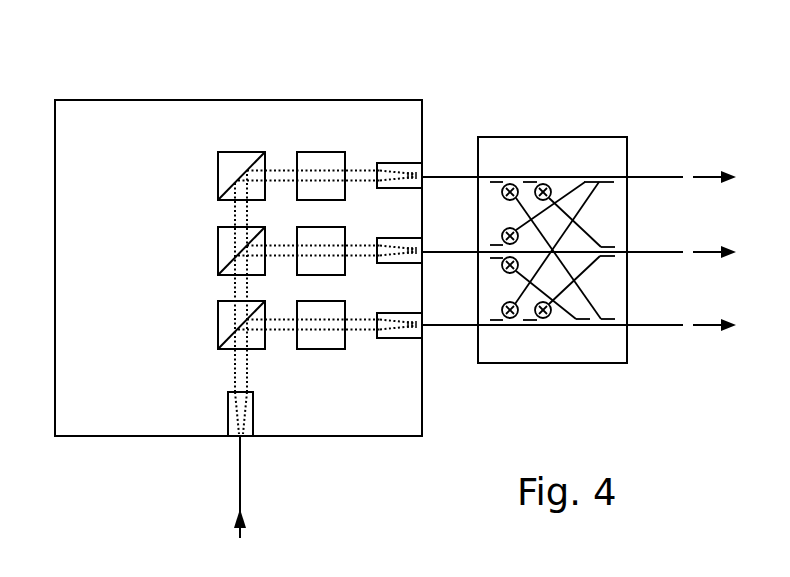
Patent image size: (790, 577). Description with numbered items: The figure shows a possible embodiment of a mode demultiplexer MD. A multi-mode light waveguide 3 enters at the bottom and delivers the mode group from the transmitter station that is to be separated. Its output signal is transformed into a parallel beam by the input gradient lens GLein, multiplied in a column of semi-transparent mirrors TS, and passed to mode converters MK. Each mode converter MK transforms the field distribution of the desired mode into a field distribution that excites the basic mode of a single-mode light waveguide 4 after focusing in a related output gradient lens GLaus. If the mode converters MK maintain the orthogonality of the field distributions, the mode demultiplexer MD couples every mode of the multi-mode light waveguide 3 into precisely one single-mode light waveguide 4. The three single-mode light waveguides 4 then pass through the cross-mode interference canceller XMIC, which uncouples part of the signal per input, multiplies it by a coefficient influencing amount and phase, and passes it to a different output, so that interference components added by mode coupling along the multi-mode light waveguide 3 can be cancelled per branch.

The mode demultiplexer MD is at (83, 125).
The semi-transparent mirrors TS is at (232, 160).
The mode converters MK is at (318, 158).
The gradient lens on the output side GLaus is at (415, 167).
The gradient lens on the input side GLein is at (253, 437).
The multi-mode light waveguide 3 is at (237, 467).
The single-mode light waveguide 4 is at (447, 175).
The cross-mode interference canceller XMIC is at (563, 157).